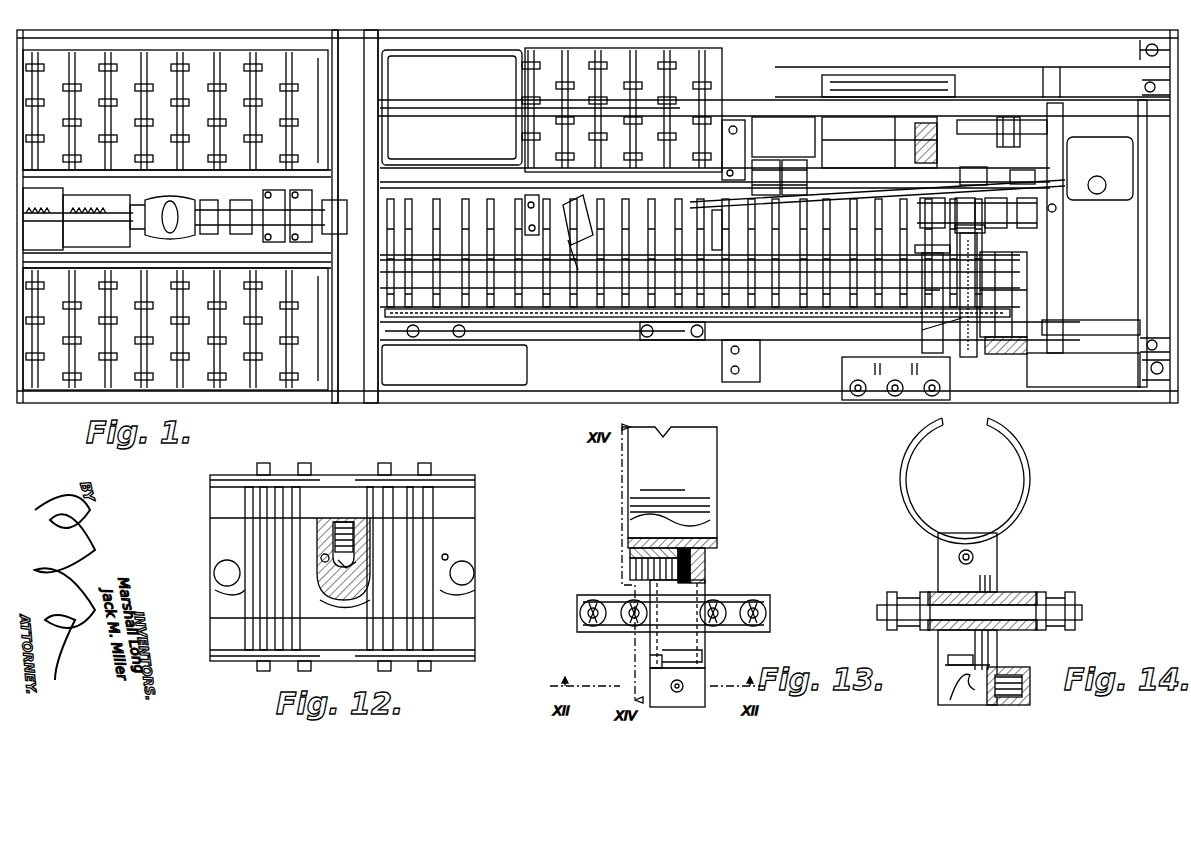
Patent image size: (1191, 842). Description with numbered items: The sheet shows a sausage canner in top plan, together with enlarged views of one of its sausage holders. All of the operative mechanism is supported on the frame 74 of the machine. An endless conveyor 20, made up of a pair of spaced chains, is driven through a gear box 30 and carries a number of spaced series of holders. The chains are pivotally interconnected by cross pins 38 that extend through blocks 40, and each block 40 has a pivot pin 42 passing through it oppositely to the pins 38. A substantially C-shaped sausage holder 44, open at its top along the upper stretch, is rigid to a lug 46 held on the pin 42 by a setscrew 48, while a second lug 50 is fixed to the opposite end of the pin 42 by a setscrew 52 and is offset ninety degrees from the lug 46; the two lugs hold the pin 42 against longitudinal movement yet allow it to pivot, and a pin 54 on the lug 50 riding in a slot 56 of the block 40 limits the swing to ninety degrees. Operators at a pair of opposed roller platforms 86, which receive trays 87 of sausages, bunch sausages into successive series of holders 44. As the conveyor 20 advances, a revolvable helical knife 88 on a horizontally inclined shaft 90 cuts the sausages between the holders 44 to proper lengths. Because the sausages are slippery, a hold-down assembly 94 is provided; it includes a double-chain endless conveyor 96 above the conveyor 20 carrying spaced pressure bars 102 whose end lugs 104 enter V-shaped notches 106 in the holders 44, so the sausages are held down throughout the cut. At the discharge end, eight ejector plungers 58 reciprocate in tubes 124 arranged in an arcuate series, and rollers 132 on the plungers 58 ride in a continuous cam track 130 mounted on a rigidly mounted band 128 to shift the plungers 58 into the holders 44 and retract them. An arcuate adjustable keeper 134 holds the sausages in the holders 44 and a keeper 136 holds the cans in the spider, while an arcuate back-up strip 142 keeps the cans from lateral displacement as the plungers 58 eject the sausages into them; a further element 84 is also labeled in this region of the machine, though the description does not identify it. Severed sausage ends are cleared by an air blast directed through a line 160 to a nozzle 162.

In FIG. 12, the endless conveyor 20 is at (220, 473).
In FIG. 13, the endless conveyor 20 is at (766, 593).
In FIG. 1, the gear box 30 is at (928, 72).
In FIG. 12, the cross pins 38 is at (372, 468).
In FIG. 13, the cross pins 38 is at (710, 615).
In FIG. 14, the cross pins 38 is at (1053, 604).
In FIG. 12, the blocks 40 is at (394, 540).
In FIG. 13, the blocks 40 is at (696, 577).
In FIG. 14, the blocks 40 is at (1017, 596).
In FIG. 12, the pivot pin 42 is at (345, 608).
In FIG. 13, the pivot pin 42 is at (705, 542).
In FIG. 14, the pivot pin 42 is at (970, 697).
In FIG. 1, the sausage holder 44 is at (190, 198).
In FIG. 13, the sausage holder 44 is at (705, 492).
In FIG. 14, the sausage holder 44 is at (904, 472).
In FIG. 13, the lug 46 is at (630, 570).
In FIG. 14, the lug 46 is at (983, 561).
In FIG. 13, the setscrew 48 is at (627, 549).
In FIG. 14, the setscrew 48 is at (957, 556).
In FIG. 12, the second lug 50 is at (323, 544).
In FIG. 14, the second lug 50 is at (1002, 668).
In FIG. 12, the setscrew 52 is at (337, 522).
In FIG. 13, the setscrew 52 is at (674, 690).
In FIG. 14, the setscrew 52 is at (1027, 680).
In FIG. 12, the pin 54 is at (332, 573).
In FIG. 13, the pin 54 is at (655, 655).
In FIG. 14, the pin 54 is at (987, 652).
In FIG. 13, the slot 56 is at (671, 665).
In FIG. 14, the slot 56 is at (953, 660).
In FIG. 1, the ejector plungers 58 is at (975, 283).
In FIG. 1, the frame 74 is at (1084, 400).
In FIG. 1, the bracket 84 is at (767, 152).
In FIG. 1, the roller platforms 86 is at (152, 51).
In FIG. 1, the trays 87 is at (420, 47).
In FIG. 1, the helical knife 88 is at (593, 198).
In FIG. 1, the shaft 90 is at (970, 171).
In FIG. 1, the hold-down assembly 94 is at (598, 327).
In FIG. 1, the endless conveyor 96 is at (480, 328).
In FIG. 1, the pressure bars 102 is at (476, 208).
In FIG. 1, the lugs 104 is at (415, 183).
In FIG. 13, the V-shaped notches 106 is at (672, 434).
In FIG. 1, the tubes 124 is at (1028, 297).
In FIG. 1, the band 128 is at (995, 350).
In FIG. 1, the cam track 130 is at (955, 356).
In FIG. 1, the rollers 132 is at (980, 114).
In FIG. 1, the keeper 134 is at (1055, 199).
In FIG. 1, the keeper 136 is at (835, 170).
In FIG. 1, the back-up strip 142 is at (858, 148).
In FIG. 1, the line 160 is at (760, 128).
In FIG. 1, the nozzle 162 is at (714, 187).